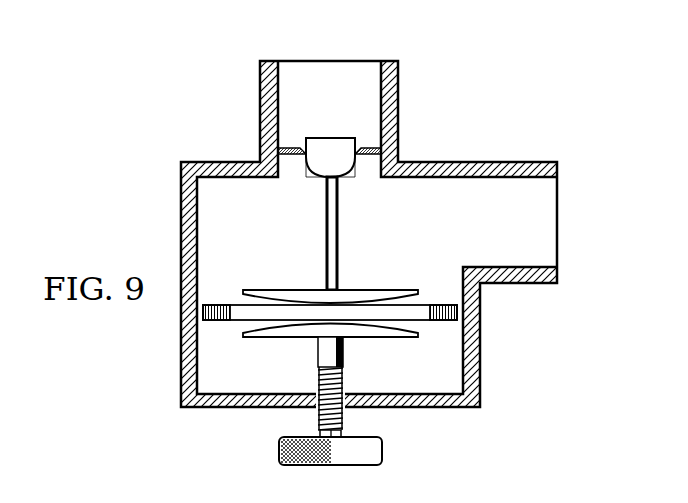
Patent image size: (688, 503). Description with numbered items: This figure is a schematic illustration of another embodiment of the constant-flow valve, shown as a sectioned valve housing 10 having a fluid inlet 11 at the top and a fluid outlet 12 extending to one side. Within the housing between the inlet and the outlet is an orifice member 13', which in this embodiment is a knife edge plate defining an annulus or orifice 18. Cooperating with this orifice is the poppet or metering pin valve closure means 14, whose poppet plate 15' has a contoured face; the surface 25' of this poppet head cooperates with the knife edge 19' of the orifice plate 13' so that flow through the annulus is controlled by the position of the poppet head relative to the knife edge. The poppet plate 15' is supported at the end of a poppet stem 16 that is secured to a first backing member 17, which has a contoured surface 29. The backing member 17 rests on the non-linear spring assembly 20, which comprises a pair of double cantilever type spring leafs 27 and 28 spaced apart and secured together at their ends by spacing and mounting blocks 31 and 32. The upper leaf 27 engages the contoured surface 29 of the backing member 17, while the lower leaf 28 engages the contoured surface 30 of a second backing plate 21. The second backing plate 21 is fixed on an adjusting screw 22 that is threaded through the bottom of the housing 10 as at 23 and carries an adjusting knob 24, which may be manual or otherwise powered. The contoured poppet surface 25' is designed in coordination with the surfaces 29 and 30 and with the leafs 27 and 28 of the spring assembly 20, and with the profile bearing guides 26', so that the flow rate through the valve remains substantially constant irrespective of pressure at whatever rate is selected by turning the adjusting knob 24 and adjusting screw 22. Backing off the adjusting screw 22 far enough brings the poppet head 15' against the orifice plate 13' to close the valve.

The valve housing 10 is at (220, 400).
The fluid inlet 11 is at (301, 55).
The fluid outlet 12 is at (526, 224).
The orifice member 13' is at (290, 132).
The poppet or metering pin valve closure means 14 is at (322, 133).
The poppet plate 15' is at (338, 139).
The poppet stem 16 is at (338, 247).
The first backing member 17 is at (304, 290).
The annulus or orifice 18 is at (360, 160).
The knife edge 19' is at (394, 139).
The spring assembly 20 is at (436, 303).
The second backing plate 21 is at (307, 331).
The adjusting screw 22 is at (348, 376).
The threaded portion of housing 23 is at (347, 404).
The adjusting knob 24 is at (280, 453).
The contoured surface of poppet head 25' is at (356, 191).
The bearing guides 26' is at (302, 184).
The double cantilever type spring leaf 27 is at (238, 303).
The double cantilever type spring leaf 28 is at (240, 322).
The contoured surface 29 is at (270, 298).
The contoured surface 30 is at (270, 327).
The spacing and mounting block 31 is at (213, 321).
The spacing and mounting block 32 is at (446, 322).